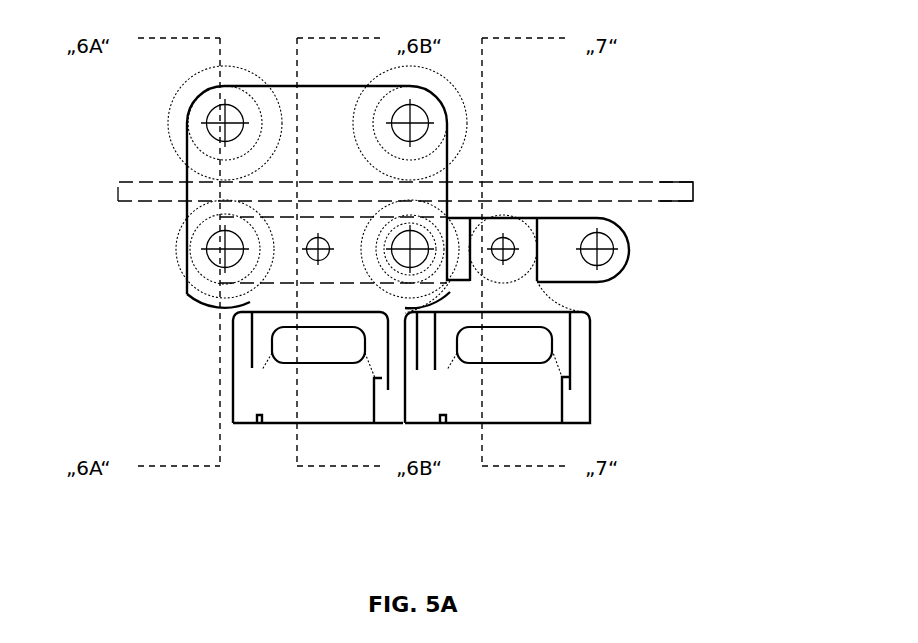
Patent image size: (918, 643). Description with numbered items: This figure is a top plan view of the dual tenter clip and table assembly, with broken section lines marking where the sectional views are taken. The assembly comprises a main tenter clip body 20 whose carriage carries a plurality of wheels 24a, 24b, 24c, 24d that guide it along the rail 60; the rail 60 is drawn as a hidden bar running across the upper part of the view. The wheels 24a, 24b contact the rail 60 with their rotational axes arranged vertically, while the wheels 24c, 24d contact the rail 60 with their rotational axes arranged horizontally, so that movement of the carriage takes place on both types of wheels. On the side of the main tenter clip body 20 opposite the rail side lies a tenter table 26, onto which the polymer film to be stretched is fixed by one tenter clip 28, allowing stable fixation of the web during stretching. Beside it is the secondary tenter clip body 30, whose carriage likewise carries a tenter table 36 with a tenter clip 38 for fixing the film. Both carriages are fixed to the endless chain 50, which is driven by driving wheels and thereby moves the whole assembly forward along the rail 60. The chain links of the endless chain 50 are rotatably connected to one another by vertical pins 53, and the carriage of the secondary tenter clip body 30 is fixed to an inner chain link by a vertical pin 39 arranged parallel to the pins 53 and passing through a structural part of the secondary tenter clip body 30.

The main tenter clip body 20 is at (250, 300).
The wheel 24a is at (160, 115).
The wheel 24b is at (438, 108).
The wheel 24c is at (178, 256).
The wheel 24d is at (400, 210).
The tenter table 26 is at (233, 397).
The tenter clip 28 is at (283, 352).
The secondary tenter clip body 30 is at (513, 300).
The tenter table 36 is at (557, 398).
The tenter clip 38 is at (517, 341).
The vertical pin 39 is at (487, 249).
The endless chain 50 is at (607, 247).
The vertical pin 53 is at (577, 253).
The rail 60 is at (662, 192).